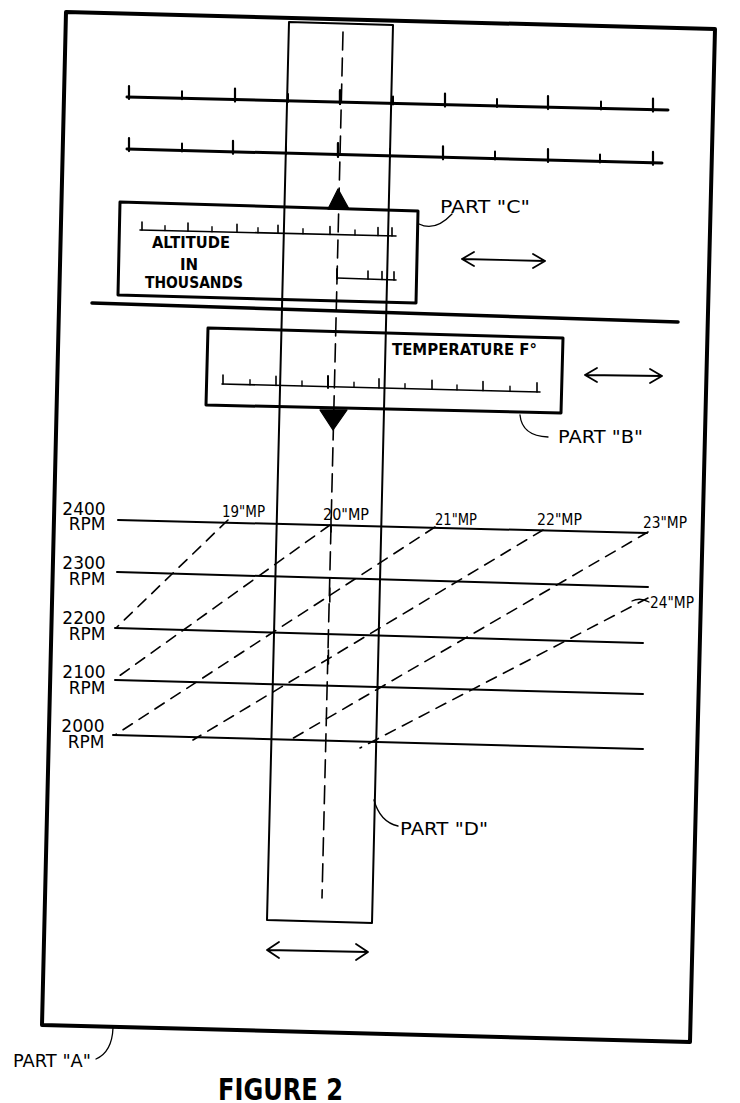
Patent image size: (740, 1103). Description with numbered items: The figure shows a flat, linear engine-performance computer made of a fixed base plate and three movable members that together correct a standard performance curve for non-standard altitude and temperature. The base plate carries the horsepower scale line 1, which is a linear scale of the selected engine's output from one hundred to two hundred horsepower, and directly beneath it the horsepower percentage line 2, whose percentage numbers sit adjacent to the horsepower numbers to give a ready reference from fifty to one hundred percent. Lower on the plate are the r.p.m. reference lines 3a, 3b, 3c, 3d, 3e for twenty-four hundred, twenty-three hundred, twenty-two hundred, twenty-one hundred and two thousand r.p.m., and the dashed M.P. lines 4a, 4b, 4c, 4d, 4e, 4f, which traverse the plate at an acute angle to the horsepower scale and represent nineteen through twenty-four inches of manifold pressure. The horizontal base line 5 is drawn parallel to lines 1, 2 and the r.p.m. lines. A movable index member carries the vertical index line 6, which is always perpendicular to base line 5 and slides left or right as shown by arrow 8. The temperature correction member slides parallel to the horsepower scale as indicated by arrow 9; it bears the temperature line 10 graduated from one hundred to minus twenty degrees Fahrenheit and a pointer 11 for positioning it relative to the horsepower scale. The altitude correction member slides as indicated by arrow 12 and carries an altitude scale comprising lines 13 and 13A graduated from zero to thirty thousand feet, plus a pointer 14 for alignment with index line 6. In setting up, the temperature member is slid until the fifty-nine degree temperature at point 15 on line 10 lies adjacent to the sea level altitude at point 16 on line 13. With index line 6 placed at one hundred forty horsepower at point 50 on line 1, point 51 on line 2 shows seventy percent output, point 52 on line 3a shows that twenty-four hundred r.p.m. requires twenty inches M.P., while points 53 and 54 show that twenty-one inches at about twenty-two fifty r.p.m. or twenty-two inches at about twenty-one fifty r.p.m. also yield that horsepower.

The horsepower scale line 1 is at (127, 97).
The horsepower percentage line 2 is at (127, 150).
The r.p.m. reference line 3a is at (160, 521).
The r.p.m. reference line 3b is at (153, 573).
The r.p.m. reference line 3c is at (156, 629).
The r.p.m. reference line 3d is at (156, 681).
The r.p.m. reference line 3e is at (156, 736).
The M.P. line 4a is at (177, 568).
The M.P. line 4b is at (271, 572).
The M.P. line 4c is at (409, 544).
The M.P. line 4d is at (508, 549).
The M.P. line 4e is at (612, 550).
The M.P. line 4f is at (588, 622).
The horizontal base line 5 is at (106, 306).
The vertical index line 6 is at (325, 823).
The arrow 8 is at (336, 953).
The arrow 9 is at (636, 378).
The temperature line 10 is at (456, 390).
The pointer 11 is at (335, 427).
The arrow 12 is at (516, 262).
The altitude scale line 13 is at (374, 280).
The altitude scale line 13A is at (292, 232).
The pointer 14 is at (341, 190).
The temperature point 15 is at (331, 388).
The sea level point 16 is at (336, 279).
The horsepower point 50 is at (340, 101).
The percentage point 51 is at (338, 155).
The r.p.m./M.P. intersection point 52 is at (332, 527).
The r.p.m./M.P. intersection point 53 is at (329, 596).
The r.p.m./M.P. intersection point 54 is at (329, 655).